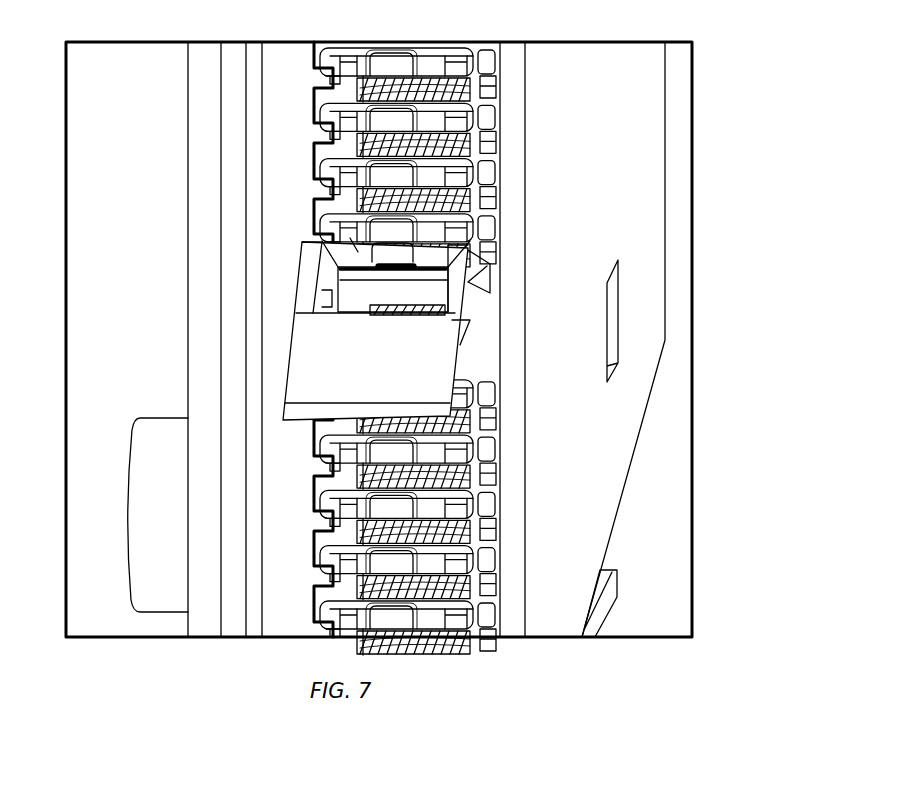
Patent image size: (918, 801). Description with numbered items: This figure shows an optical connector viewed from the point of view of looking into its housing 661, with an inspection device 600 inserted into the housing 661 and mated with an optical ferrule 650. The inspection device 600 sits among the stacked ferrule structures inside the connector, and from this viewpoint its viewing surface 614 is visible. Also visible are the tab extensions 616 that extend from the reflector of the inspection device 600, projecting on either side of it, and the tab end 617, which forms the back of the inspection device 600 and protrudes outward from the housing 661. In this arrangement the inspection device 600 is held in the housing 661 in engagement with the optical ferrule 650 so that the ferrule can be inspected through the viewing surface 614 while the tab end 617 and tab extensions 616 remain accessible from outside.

The inspection device 600 is at (355, 301).
The viewing surface 614 is at (358, 292).
The tab extensions 616 is at (308, 263).
The tab end 617 is at (425, 382).
The optical ferrule 650 is at (337, 235).
The housing 661 is at (643, 137).